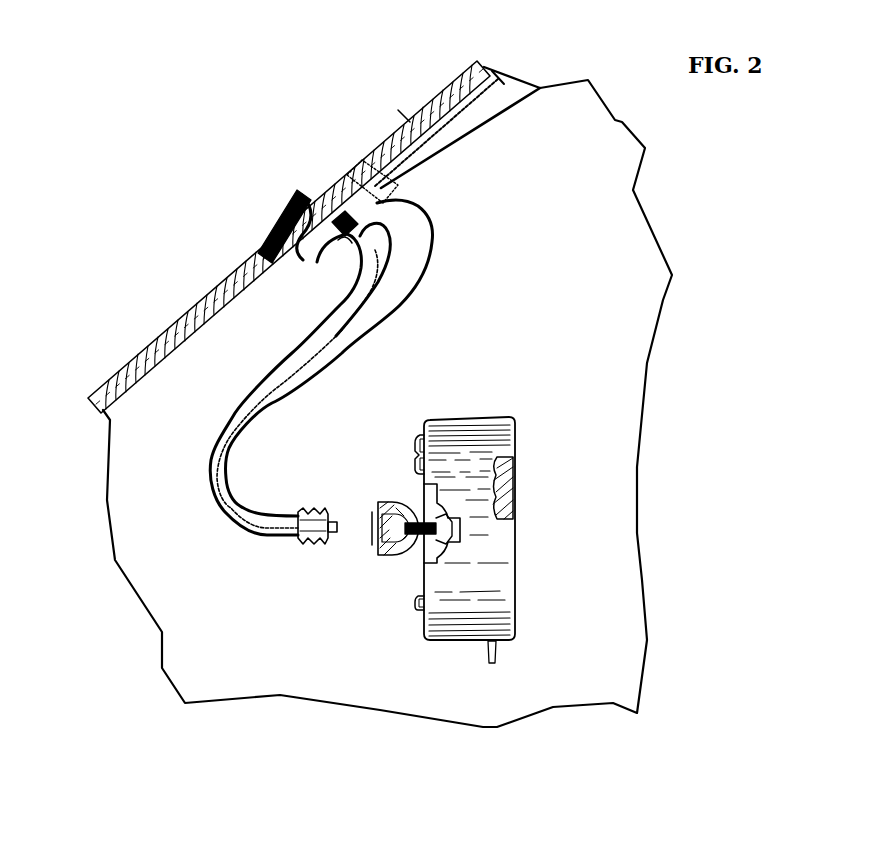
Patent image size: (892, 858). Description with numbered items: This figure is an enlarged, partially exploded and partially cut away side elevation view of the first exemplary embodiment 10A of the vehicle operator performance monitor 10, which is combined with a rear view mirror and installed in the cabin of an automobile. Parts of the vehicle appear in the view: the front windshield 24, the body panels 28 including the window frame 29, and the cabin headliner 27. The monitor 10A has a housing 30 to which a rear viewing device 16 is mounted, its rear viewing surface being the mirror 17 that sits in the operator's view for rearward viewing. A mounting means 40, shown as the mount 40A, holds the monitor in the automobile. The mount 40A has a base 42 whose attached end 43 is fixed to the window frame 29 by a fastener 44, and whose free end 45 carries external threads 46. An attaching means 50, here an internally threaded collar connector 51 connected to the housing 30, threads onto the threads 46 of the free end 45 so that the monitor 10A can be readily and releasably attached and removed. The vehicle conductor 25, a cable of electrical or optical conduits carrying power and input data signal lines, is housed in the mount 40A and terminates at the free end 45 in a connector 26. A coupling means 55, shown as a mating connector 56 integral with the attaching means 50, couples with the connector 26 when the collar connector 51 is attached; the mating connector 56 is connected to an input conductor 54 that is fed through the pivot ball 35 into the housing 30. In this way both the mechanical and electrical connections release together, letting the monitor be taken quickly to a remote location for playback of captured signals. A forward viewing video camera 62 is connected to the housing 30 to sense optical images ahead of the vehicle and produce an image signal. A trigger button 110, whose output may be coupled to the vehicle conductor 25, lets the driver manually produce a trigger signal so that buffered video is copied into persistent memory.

The vehicle operator performance monitor 10 is at (464, 494).
The first exemplary embodiment of monitor 10A is at (464, 500).
The rear viewing device 16 is at (548, 479).
The mirror 17 is at (510, 487).
The front windshield 24 is at (207, 290).
The vehicle conductor 25 is at (488, 73).
The connector 26 is at (334, 528).
The cabin headliner 27 is at (467, 136).
The body panels 28 is at (343, 160).
The window frame 29 is at (402, 116).
The housing 30 is at (461, 500).
The pivot ball 35 is at (442, 513).
The mounting means 40 is at (352, 328).
The mount 40A is at (352, 328).
The base 42 is at (434, 243).
The attached end 43 is at (394, 208).
The fastener 44 is at (343, 243).
The free end 45 is at (297, 539).
The external threads 46 is at (312, 512).
The attaching means 50 is at (414, 546).
The collar connector 51 is at (397, 562).
The input conductor 54 is at (452, 528).
The coupling means 55 is at (383, 538).
The mating connector 56 is at (362, 520).
The forward viewing video camera 62 is at (418, 603).
The trigger button 110 is at (420, 442).